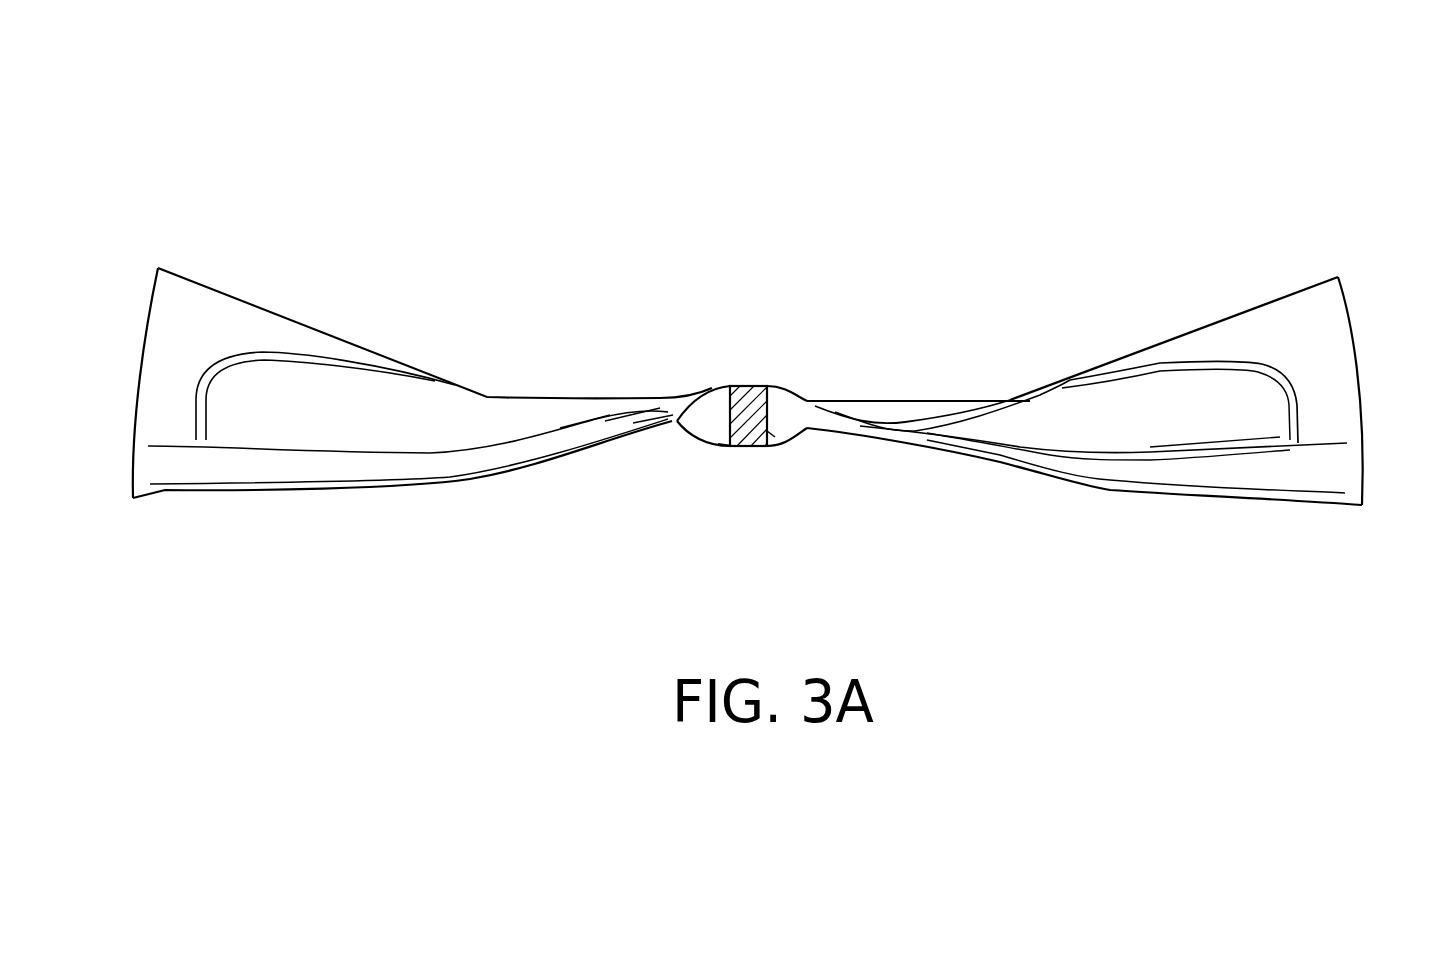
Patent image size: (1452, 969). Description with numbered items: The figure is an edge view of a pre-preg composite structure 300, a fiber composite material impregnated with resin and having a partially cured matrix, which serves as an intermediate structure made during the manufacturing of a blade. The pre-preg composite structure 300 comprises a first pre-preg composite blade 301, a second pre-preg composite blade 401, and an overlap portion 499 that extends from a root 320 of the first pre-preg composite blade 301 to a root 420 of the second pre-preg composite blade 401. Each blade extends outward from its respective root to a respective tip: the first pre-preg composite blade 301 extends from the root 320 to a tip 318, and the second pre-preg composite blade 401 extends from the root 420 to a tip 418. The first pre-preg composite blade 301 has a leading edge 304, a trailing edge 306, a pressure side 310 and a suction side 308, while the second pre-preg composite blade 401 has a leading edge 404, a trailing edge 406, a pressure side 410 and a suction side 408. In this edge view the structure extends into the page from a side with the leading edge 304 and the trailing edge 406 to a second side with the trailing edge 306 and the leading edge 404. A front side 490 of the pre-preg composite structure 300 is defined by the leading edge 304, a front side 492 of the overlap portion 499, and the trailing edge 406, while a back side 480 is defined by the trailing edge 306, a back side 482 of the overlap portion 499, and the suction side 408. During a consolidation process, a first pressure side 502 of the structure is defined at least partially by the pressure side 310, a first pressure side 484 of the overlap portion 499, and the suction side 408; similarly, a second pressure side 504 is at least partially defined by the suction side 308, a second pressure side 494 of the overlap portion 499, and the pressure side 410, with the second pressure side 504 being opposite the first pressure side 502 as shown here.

The pre-preg composite structure 300 is at (424, 160).
The first pre-preg composite blade 301 is at (320, 220).
The tip 318 is at (142, 322).
The trailing edge 306 is at (335, 330).
The leading edge 304 is at (282, 490).
The pressure side 310 is at (373, 383).
The back side 480 is at (538, 308).
The first pressure side 502 is at (478, 396).
The front side 490 is at (360, 506).
The suction side 308 is at (563, 450).
The root 320 is at (720, 395).
The back side 482 is at (745, 386).
The first pressure side 484 is at (757, 400).
The root 420 is at (777, 400).
The second pressure side 494 is at (732, 446).
The front side 492 is at (750, 446).
The overlap portion 499 is at (747, 417).
The second pre-preg composite blade 401 is at (1088, 283).
The trailing edge 406 is at (1252, 309).
The tip 418 is at (1342, 290).
The leading edge 404 is at (1280, 497).
The suction side 408 is at (918, 408).
The second pressure side 504 is at (1328, 404).
The pressure side 410 is at (1140, 446).